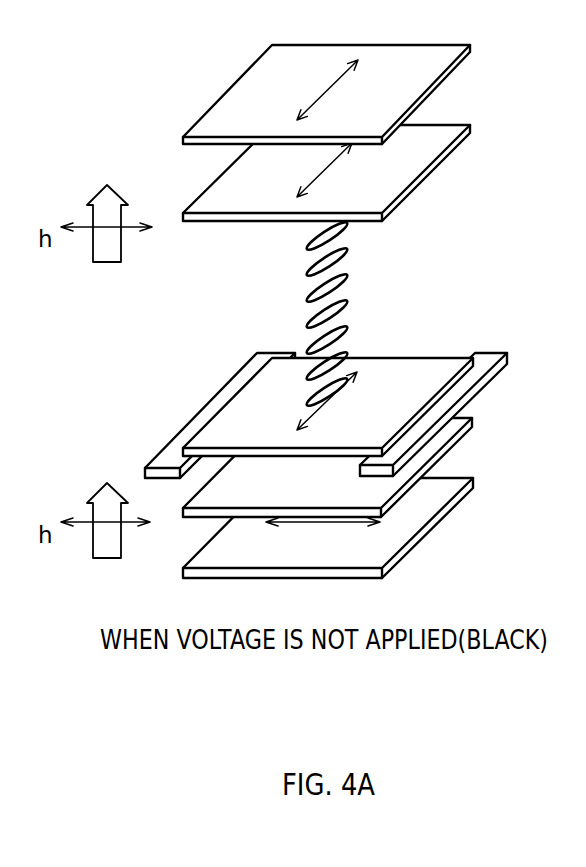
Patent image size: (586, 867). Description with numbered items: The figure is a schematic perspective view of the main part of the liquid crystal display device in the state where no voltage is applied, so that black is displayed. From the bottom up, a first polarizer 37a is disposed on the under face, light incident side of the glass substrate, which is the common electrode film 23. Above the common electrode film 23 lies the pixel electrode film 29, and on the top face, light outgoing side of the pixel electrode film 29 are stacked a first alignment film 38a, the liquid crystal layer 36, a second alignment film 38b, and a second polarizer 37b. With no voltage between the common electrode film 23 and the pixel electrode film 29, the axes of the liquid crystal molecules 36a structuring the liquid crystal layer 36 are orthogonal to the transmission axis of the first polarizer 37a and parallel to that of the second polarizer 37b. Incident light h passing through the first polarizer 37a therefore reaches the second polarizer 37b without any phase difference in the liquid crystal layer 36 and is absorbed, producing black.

The first polarizer 37a is at (430, 502).
The second polarizer 37b is at (430, 72).
The first alignment film 38a is at (405, 363).
The second alignment film 38b is at (432, 148).
The liquid crystal layer 36 is at (428, 266).
The liquid crystal molecules 36a is at (342, 280).
The pixel electrode film 29 is at (228, 397).
The common electrode film 23 is at (424, 457).